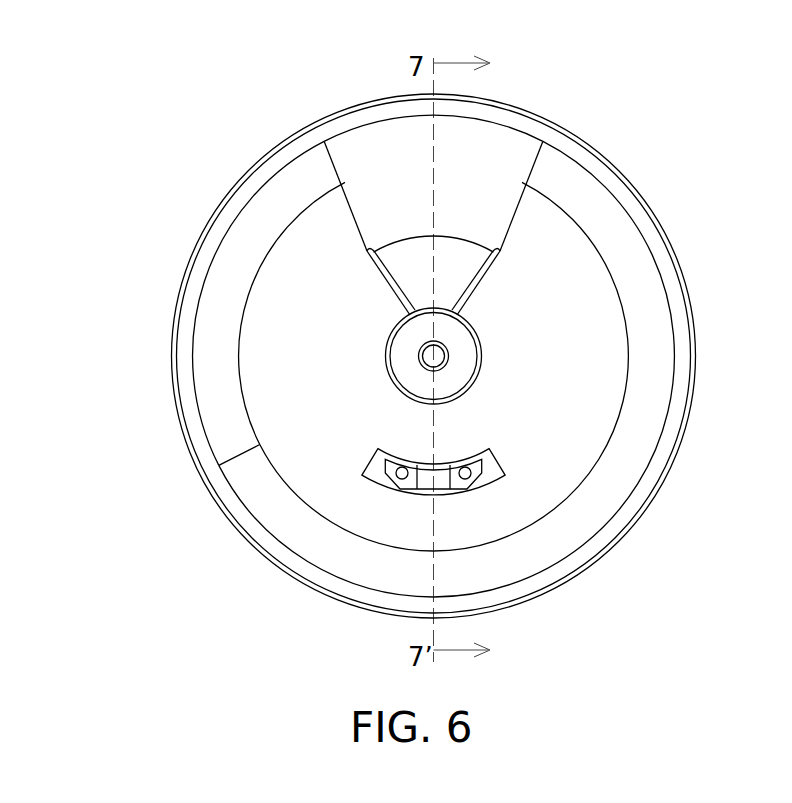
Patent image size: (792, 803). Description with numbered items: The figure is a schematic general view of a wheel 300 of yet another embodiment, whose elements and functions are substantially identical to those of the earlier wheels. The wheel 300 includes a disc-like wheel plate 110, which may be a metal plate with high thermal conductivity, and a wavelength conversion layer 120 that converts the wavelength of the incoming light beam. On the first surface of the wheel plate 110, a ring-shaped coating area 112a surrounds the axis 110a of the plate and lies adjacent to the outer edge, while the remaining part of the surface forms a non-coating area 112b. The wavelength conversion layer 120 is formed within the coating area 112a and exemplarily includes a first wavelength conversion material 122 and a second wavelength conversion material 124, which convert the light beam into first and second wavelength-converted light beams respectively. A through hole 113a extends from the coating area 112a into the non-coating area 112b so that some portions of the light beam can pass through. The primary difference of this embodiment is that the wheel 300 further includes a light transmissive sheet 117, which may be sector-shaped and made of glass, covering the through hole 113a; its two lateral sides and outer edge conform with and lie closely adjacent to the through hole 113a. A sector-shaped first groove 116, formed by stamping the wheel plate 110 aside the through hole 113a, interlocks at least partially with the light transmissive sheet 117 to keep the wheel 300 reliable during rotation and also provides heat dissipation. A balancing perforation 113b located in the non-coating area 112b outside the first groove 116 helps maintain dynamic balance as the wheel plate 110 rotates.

The wheel 300 is at (148, 185).
The wheel plate 110 is at (280, 163).
The axis 110a is at (440, 357).
The coating area 112a is at (641, 459).
The non-coating area 112b is at (591, 255).
The through hole 113a is at (387, 150).
The balancing perforation 113b is at (501, 483).
The first groove 116 is at (464, 267).
The light transmissive sheet 117 is at (500, 145).
The wavelength conversion layer 120 is at (239, 369).
The first wavelength conversion material 122 is at (232, 333).
The second wavelength conversion material 124 is at (276, 521).